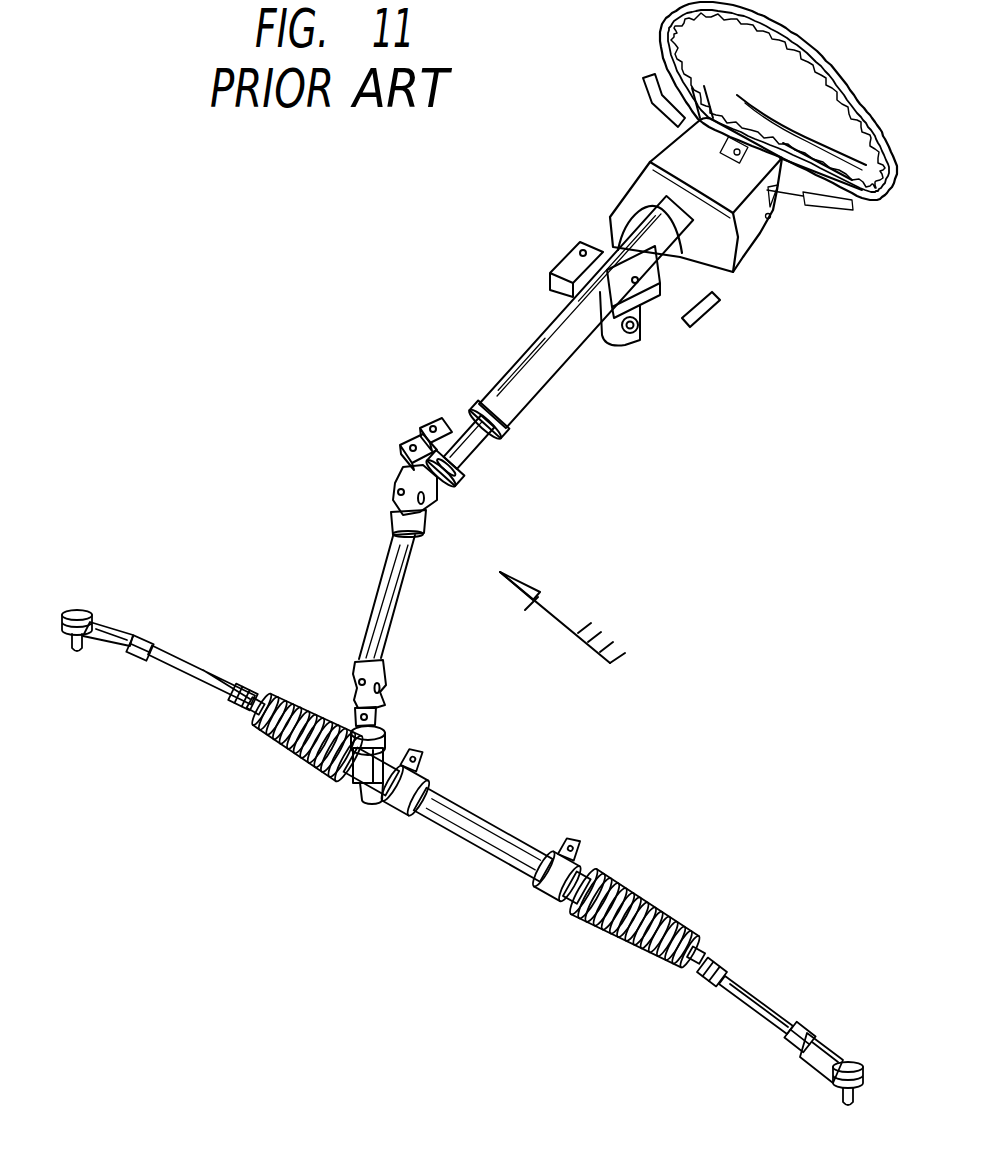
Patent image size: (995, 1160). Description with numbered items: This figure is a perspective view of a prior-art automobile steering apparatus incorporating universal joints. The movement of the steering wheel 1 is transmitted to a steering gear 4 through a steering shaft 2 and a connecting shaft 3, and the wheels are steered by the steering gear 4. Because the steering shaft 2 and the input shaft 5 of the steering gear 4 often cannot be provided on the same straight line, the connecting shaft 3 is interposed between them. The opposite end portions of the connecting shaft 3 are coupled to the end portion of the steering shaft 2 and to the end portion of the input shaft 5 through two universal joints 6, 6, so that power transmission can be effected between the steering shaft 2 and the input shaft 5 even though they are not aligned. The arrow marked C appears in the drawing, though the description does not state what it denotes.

The steering wheel 1 is at (840, 78).
The steering shaft 2 is at (480, 448).
The connecting shaft 3 is at (392, 597).
The steering gear 4 is at (355, 780).
The input shaft 5 is at (370, 725).
The universal joint 6 is at (406, 480).
The direction of vehicle travel C is at (558, 618).